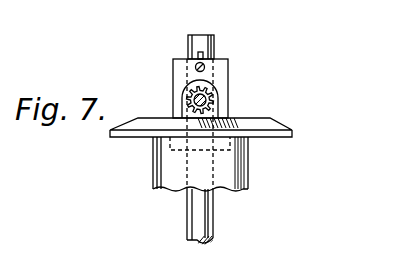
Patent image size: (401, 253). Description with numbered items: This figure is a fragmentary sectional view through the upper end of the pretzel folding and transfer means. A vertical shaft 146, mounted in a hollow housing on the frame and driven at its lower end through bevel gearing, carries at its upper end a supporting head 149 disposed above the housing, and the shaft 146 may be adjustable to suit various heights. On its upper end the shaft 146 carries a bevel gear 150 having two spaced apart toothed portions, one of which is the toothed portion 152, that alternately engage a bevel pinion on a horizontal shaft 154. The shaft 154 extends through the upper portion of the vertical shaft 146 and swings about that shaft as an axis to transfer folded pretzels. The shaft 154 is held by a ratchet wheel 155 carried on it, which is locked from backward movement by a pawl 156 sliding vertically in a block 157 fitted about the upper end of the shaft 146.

The vertical shaft 146 is at (214, 44).
The supporting head 149 is at (155, 168).
The bevel gear 150 is at (266, 119).
The toothed portion 152 is at (236, 139).
The horizontal shaft 154 is at (207, 105).
The ratchet wheel 155 is at (213, 91).
The pawl 156 is at (211, 82).
The block 157 is at (173, 61).